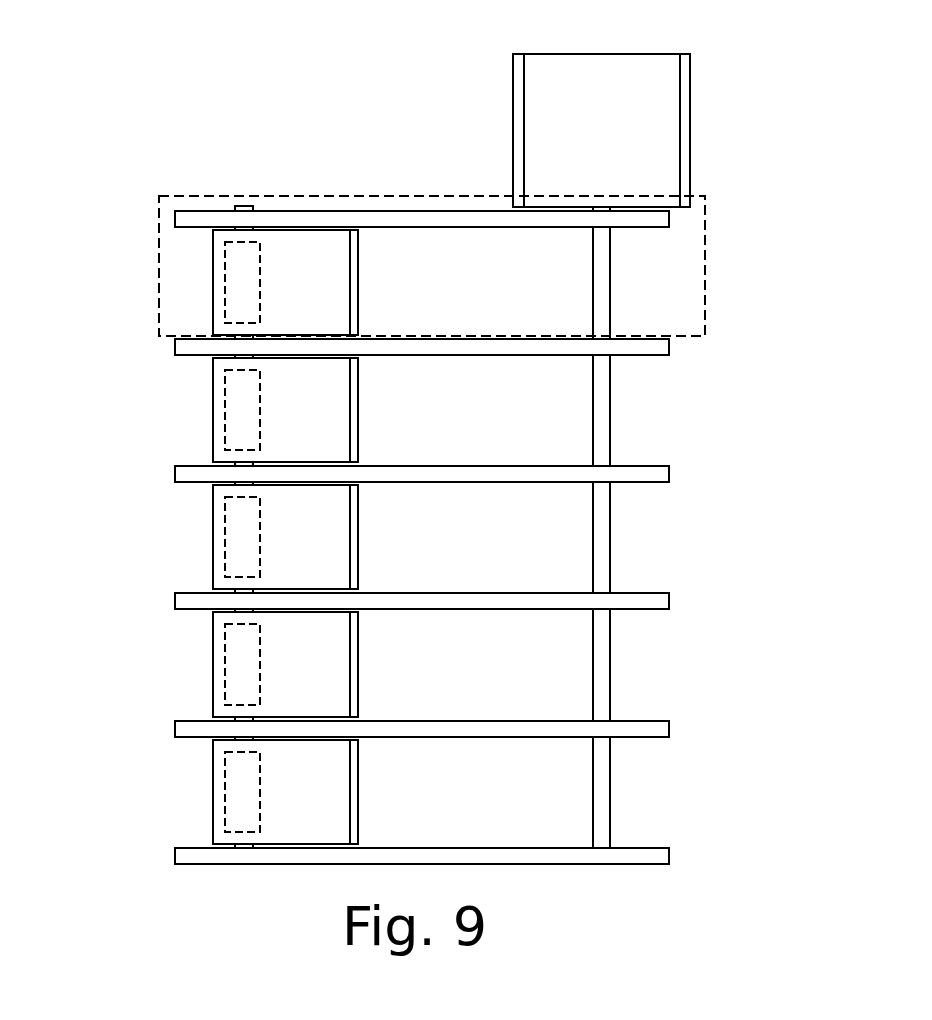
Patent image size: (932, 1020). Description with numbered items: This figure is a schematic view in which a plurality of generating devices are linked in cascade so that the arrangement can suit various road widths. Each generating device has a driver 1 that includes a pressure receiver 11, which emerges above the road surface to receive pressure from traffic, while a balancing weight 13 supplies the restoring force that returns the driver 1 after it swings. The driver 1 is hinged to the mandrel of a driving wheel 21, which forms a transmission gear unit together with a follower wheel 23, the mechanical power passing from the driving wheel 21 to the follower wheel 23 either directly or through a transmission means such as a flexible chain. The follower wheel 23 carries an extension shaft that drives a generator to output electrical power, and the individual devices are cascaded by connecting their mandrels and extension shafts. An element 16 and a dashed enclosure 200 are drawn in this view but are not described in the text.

The driver 1 is at (303, 260).
The pressure receiver 11 is at (285, 410).
The balancing weight 13 is at (240, 417).
The control box 16 is at (663, 140).
The driving wheel 21 is at (240, 203).
The follower wheel 23 is at (611, 285).
The shelf unit assembly 200 is at (705, 260).